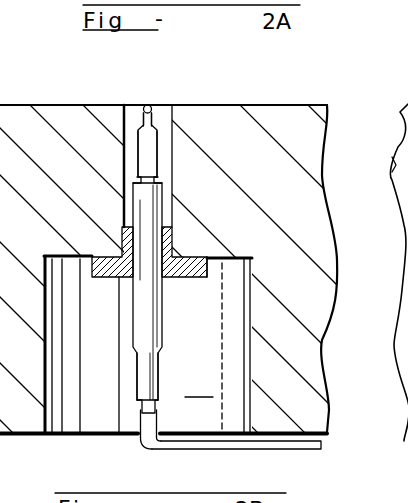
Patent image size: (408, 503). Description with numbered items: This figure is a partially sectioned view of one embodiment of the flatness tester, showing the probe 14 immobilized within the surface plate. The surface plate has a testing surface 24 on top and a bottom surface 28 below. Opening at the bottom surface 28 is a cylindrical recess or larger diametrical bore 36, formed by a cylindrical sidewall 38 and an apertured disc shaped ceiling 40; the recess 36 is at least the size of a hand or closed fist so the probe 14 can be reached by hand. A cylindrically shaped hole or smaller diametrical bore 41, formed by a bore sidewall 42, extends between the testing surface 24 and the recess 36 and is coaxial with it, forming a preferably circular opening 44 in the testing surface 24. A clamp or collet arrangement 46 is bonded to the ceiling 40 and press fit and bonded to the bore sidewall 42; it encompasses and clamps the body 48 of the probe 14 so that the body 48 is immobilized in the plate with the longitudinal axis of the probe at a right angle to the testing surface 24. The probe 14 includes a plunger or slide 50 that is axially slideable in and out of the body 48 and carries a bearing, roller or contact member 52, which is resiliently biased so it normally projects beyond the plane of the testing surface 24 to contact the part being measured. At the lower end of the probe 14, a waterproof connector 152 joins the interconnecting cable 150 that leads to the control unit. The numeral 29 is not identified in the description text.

The testing surface 24 is at (13, 104).
The housing 29 is at (11, 9).
The bore sidewall 42 is at (134, 106).
The plunger 50 is at (140, 106).
The contact member 52 is at (150, 106).
The opening 44 is at (164, 106).
The smaller diametrical bore 41 is at (163, 229).
The ceiling 40 is at (63, 258).
The clamp arrangement 46 is at (188, 278).
The body 48 is at (163, 335).
The recess 36 is at (219, 344).
The cylindrical sidewall 38 is at (66, 338).
The probe 14 is at (136, 394).
The bottom surface 28 is at (95, 437).
The connector 152 is at (153, 408).
The interconnecting cable 150 is at (254, 450).